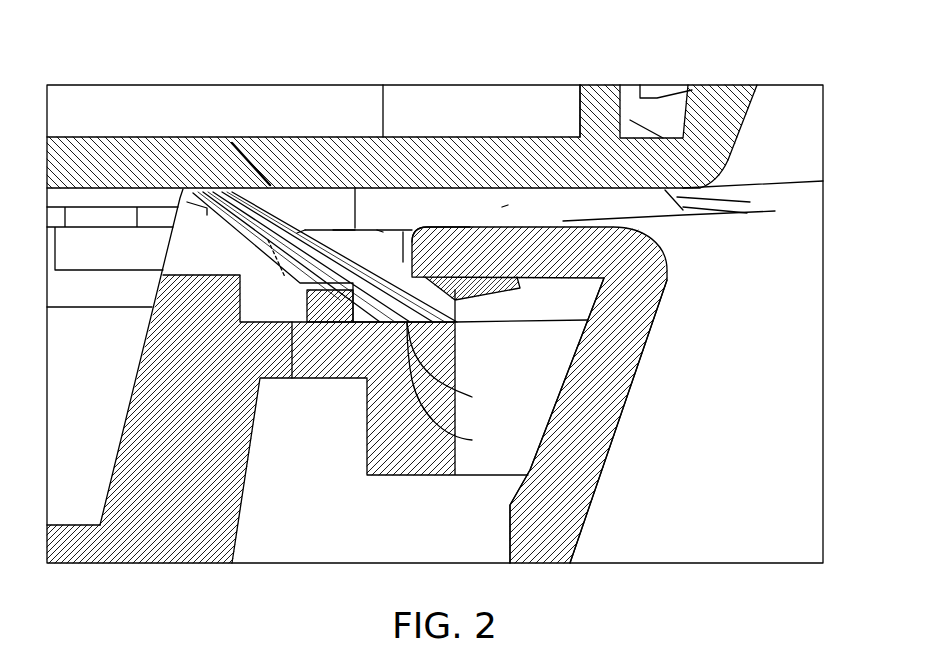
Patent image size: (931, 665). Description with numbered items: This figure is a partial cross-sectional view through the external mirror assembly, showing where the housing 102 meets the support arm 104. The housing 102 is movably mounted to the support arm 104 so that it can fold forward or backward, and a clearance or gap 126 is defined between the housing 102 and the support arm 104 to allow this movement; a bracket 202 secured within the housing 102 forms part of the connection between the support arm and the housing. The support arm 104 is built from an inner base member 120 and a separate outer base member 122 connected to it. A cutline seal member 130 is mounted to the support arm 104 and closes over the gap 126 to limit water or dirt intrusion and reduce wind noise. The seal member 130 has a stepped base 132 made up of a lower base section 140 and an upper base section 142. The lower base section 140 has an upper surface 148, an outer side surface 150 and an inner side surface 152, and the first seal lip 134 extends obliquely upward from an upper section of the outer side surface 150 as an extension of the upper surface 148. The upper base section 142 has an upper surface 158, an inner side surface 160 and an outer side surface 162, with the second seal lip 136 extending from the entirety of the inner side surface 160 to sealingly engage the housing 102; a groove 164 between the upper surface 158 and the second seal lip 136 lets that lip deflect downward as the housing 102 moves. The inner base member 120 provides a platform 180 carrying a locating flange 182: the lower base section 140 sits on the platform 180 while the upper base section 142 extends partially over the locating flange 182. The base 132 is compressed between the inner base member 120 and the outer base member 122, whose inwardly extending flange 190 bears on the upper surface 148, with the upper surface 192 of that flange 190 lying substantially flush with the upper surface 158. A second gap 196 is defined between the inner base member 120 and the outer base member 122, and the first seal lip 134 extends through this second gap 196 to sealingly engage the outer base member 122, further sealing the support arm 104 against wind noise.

The housing 102 is at (100, 137).
The support arm 104 is at (597, 460).
The inner base member 120 is at (240, 515).
The outer base member 122 is at (577, 515).
The gap 126 is at (502, 207).
The cutline seal member 130 is at (310, 228).
The base 132 is at (333, 230).
The first seal lip 134 is at (500, 283).
The second seal lip 136 is at (205, 210).
The lower base section 140 is at (459, 391).
The upper base section 142 is at (377, 230).
The upper surface 148 is at (468, 227).
The outer side surface 150 is at (460, 312).
The inner side surface 152 is at (357, 300).
The upper surface 158 is at (297, 233).
The inner side surface 160 is at (303, 282).
The outer side surface 162 is at (403, 232).
The groove 164 is at (228, 137).
The platform 180 is at (459, 369).
The locating flange 182 is at (307, 322).
The inwardly extending flange 190 is at (568, 218).
The upper surface 192 is at (562, 221).
The second gap 196 is at (543, 301).
The bracket 202 is at (384, 118).